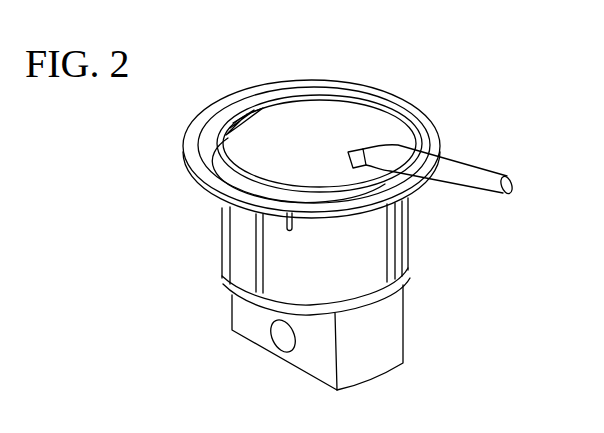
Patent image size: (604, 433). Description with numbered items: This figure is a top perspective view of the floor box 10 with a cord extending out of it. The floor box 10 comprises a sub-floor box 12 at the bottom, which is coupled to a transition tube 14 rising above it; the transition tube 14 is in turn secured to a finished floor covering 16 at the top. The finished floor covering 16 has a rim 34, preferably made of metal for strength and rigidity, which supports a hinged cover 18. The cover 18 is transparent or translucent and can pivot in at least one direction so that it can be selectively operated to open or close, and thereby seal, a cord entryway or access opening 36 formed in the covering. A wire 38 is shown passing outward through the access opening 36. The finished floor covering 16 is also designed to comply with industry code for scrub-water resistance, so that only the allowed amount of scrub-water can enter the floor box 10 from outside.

The floor box 10 is at (462, 257).
The sub-floor box 12 is at (402, 319).
The transition tube 14 is at (222, 239).
The finished floor covering 16 is at (402, 79).
The hinged cover 18 is at (299, 131).
The rim 34 is at (191, 156).
The access opening 36 is at (352, 150).
The wire 38 is at (483, 178).